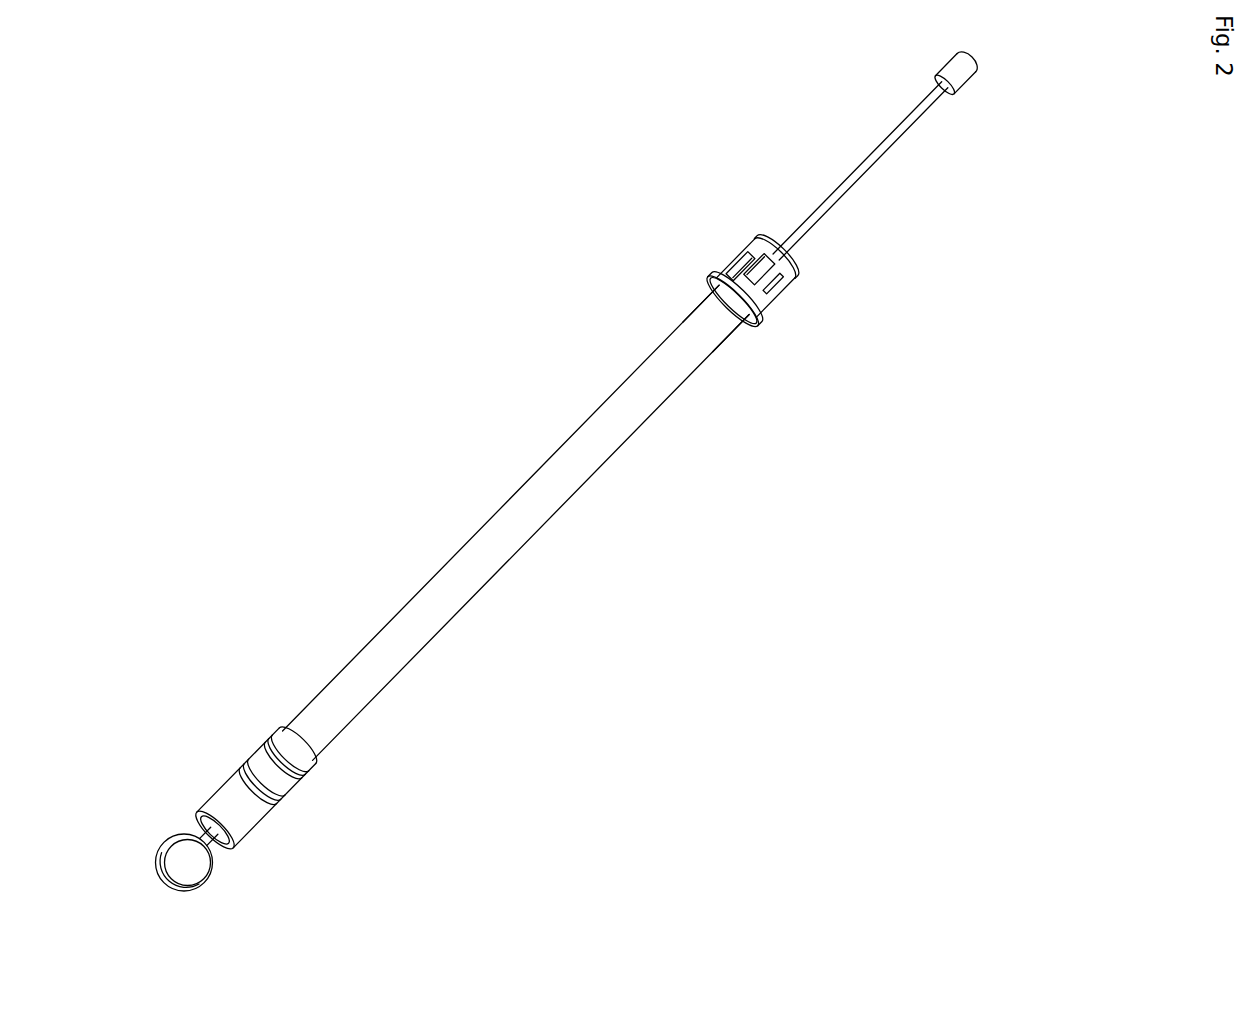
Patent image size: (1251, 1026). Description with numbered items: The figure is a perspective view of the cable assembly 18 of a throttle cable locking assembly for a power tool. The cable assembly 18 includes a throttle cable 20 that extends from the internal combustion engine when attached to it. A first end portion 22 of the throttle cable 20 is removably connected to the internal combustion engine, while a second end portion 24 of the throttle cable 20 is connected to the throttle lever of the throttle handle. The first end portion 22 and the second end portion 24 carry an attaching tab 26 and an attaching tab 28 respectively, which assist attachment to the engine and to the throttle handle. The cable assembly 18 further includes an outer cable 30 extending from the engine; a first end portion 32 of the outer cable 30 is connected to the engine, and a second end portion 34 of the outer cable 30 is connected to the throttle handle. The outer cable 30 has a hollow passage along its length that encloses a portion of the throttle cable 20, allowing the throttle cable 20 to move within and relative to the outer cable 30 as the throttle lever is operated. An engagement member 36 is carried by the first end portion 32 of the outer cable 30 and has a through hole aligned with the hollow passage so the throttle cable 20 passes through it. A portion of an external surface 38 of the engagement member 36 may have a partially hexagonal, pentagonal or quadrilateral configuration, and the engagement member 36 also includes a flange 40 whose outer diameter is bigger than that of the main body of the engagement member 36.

The cable assembly 18 is at (291, 179).
The throttle cable 20 is at (835, 176).
The first end portion 22 is at (933, 103).
The second end portion 24 is at (217, 847).
The attaching tab 26 is at (963, 75).
The attaching tab 28 is at (180, 836).
The outer cable 30 is at (497, 513).
The first end portion 32 is at (705, 318).
The second end portion 34 is at (222, 797).
The engagement member 36 is at (750, 244).
The external surface 38 is at (784, 272).
The flange 40 is at (760, 323).